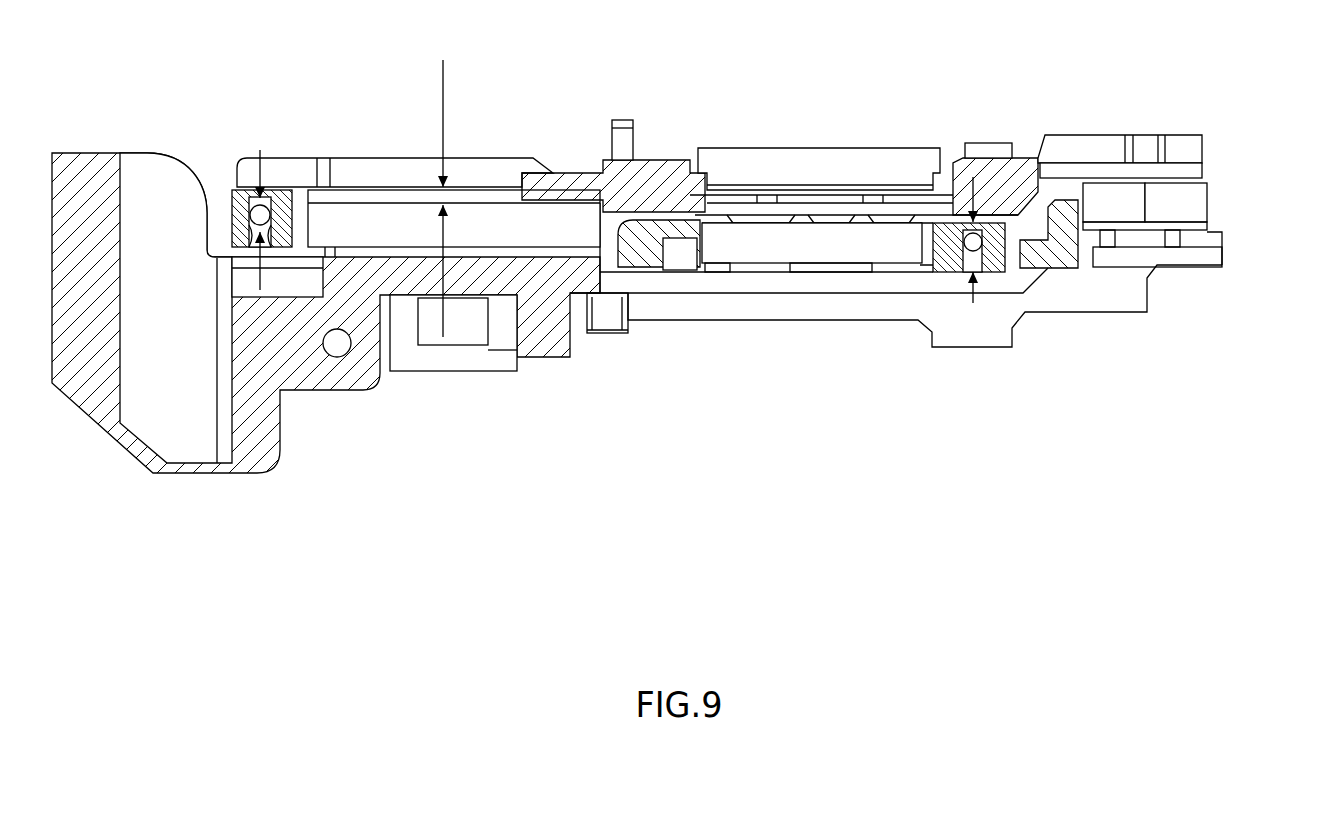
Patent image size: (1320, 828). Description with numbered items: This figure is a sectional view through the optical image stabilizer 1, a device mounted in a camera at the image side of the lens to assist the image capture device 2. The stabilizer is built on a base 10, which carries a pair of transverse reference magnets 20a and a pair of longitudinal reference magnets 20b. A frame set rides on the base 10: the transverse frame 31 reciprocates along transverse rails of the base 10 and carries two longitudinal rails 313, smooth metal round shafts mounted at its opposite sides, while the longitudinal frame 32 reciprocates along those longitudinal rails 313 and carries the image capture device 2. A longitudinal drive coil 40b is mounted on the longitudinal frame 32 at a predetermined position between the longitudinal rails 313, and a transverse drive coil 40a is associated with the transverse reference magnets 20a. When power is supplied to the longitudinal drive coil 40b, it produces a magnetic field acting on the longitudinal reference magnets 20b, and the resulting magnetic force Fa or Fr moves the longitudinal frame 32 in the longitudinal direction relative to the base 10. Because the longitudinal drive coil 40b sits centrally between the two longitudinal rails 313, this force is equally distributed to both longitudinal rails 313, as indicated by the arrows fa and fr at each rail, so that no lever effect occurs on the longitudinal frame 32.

The optical image stabilizer 1 is at (680, 339).
The image capture device 2 is at (800, 148).
The base 10 is at (317, 373).
The transverse reference magnets 20a is at (1222, 197).
The longitudinal reference magnets 20b is at (510, 227).
The transverse frame 31 is at (812, 245).
The longitudinal frame 32 is at (1018, 158).
The transverse drive coil 40a is at (1118, 175).
The longitudinal drive coil 40b is at (393, 197).
The longitudinal rails 313 is at (247, 204).